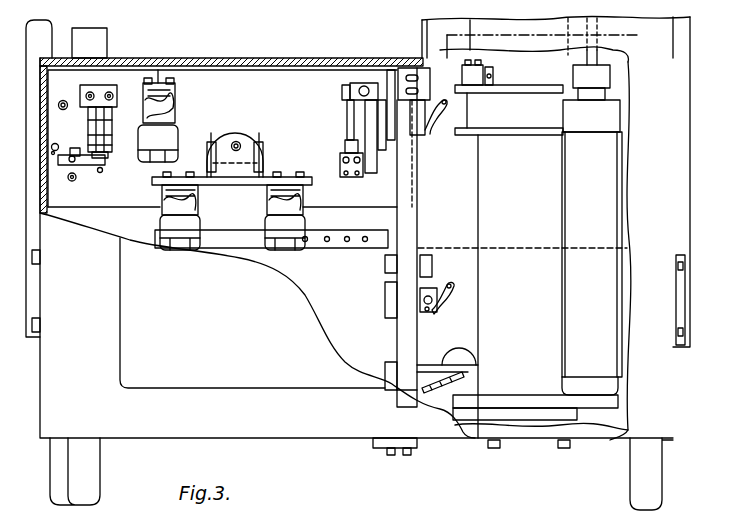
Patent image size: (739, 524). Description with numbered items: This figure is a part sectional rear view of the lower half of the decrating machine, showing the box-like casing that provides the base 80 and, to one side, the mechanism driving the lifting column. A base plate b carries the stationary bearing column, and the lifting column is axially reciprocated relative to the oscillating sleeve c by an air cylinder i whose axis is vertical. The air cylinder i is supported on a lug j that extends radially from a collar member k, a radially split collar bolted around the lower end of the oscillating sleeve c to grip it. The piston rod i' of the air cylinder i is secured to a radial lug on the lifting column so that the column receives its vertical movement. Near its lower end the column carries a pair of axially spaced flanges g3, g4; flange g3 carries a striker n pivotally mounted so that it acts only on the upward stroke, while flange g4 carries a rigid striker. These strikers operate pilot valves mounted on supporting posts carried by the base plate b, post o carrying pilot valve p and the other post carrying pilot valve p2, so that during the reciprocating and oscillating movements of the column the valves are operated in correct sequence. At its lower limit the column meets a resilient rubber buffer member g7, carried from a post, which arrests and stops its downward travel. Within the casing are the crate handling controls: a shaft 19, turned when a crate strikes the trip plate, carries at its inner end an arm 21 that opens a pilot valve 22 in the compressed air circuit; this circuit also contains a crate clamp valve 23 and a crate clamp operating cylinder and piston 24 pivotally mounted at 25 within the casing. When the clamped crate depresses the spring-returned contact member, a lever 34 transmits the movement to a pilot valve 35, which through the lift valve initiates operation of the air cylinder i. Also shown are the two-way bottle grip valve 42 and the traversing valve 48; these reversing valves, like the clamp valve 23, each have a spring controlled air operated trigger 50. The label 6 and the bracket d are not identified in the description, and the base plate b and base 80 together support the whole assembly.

The shaft 19 is at (72, 182).
The arm 21 is at (87, 160).
The pilot valve 22 is at (105, 128).
The crate clamp valve 23 is at (286, 228).
The crate clamp operating cylinder and piston 24 is at (240, 142).
The pivot mounting 25 is at (261, 182).
The lever 34 is at (350, 90).
The pilot valve 35 is at (349, 166).
The two-way bottle grip valve 42 is at (178, 228).
The traversing valve 48 is at (160, 138).
The spring controlled air operated trigger 50 is at (163, 108).
The base 80 is at (237, 336).
The casing 6 is at (542, 79).
The base plate b is at (495, 448).
The oscillating sleeve c is at (497, 206).
The base plate d is at (532, 418).
The flange g3 is at (555, 88).
The flange g4 is at (538, 134).
The resilient buffer member g7 is at (460, 352).
The air cylinder i is at (607, 263).
The piston rod i' is at (616, 68).
The lug j is at (597, 403).
The collar member k is at (474, 403).
The striker n is at (470, 75).
The supporting post o is at (405, 342).
The pilot valve p is at (427, 122).
The pilot valve p2 is at (428, 294).